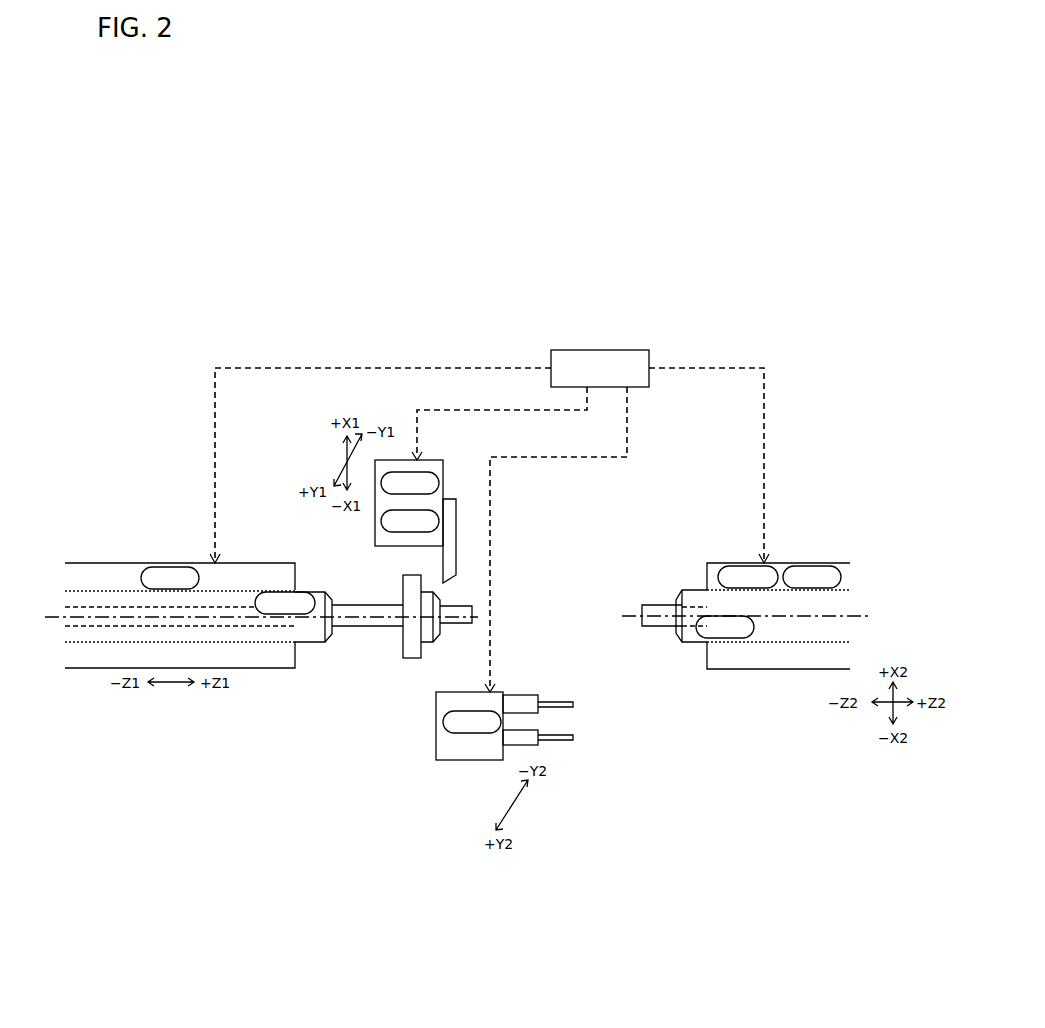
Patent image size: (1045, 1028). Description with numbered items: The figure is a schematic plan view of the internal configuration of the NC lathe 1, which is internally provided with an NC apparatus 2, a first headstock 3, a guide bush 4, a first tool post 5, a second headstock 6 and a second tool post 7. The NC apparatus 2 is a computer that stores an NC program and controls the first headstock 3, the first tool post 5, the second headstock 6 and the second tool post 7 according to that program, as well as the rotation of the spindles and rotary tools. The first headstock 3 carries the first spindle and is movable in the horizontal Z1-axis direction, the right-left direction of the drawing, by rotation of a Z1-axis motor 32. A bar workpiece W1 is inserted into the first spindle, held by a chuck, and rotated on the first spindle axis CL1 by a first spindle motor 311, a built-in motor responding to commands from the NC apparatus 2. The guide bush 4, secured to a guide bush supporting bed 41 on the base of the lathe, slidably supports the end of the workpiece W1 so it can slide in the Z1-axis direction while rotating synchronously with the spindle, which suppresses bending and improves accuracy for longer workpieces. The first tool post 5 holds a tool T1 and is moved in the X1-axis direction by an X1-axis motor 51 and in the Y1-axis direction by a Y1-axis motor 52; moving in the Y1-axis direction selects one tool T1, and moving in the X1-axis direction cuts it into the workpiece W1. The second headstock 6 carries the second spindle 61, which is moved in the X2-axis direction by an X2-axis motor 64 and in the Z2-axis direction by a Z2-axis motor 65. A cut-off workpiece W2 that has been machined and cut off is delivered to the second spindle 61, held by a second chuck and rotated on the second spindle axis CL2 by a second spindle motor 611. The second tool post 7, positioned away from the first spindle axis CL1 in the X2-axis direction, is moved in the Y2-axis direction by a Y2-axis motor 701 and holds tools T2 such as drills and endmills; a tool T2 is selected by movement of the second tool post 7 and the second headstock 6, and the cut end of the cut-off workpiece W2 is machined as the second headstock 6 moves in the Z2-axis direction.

The NC lathe 1 is at (256, 722).
The NC apparatus 2 is at (601, 350).
The first headstock 3 is at (127, 563).
The Z1-axis motor 32 is at (172, 567).
The first spindle motor 311 is at (258, 592).
The guide bush 4 is at (427, 642).
The guide bush supporting bed 41 is at (403, 648).
The first tool post 5 is at (375, 536).
The X1-axis motor 51 is at (430, 472).
The Y1-axis motor 52 is at (400, 532).
The second headstock 6 is at (782, 563).
The second spindle 61 is at (692, 590).
The second spindle motor 611 is at (755, 638).
The X2-axis motor 64 is at (715, 566).
The Z2-axis motor 65 is at (835, 566).
The second tool post 7 is at (436, 742).
The Y2-axis motor 701 is at (468, 733).
The workpiece W1 is at (455, 625).
The cut-off workpiece W2 is at (655, 627).
The tool T1 is at (456, 520).
The tool T2 is at (577, 738).
The first spindle axis CL1 is at (57, 615).
The second spindle axis CL2 is at (863, 614).